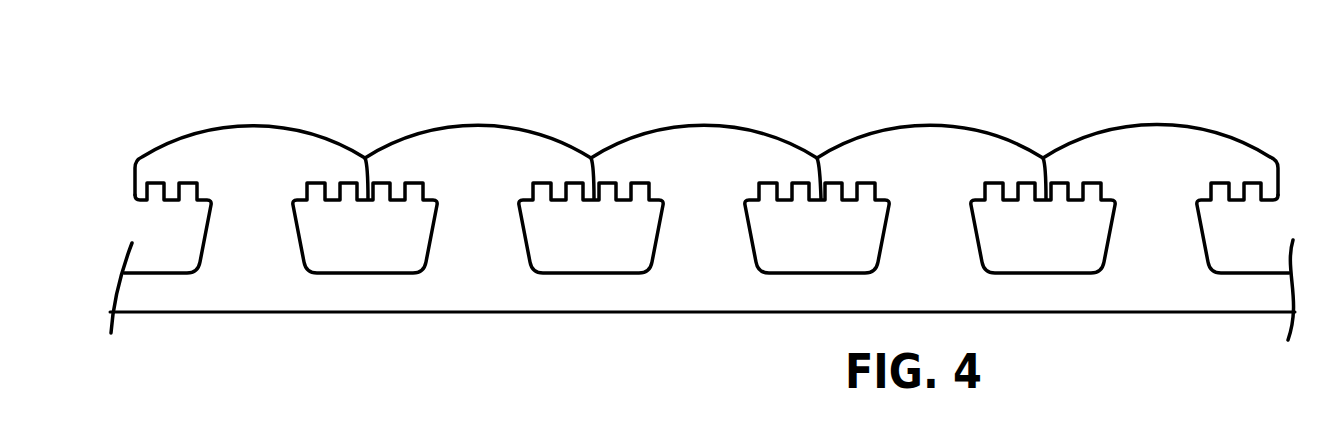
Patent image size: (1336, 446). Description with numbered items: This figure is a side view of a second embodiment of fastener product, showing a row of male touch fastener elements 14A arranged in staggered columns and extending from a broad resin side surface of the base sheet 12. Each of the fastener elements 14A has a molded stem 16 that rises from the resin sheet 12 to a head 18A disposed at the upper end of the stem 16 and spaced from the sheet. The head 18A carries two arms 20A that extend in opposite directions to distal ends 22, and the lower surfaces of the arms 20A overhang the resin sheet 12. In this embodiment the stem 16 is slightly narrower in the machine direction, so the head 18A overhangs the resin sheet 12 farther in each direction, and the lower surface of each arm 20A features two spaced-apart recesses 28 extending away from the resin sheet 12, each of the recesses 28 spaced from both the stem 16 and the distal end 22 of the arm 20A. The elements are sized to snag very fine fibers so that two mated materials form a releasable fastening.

The base sheet 12 is at (625, 313).
The fastener elements 14A is at (410, 113).
The stem 16 is at (420, 242).
The head 18A is at (508, 127).
The arms 20A is at (202, 132).
The distal end 22 is at (827, 172).
The recesses 28 is at (610, 197).